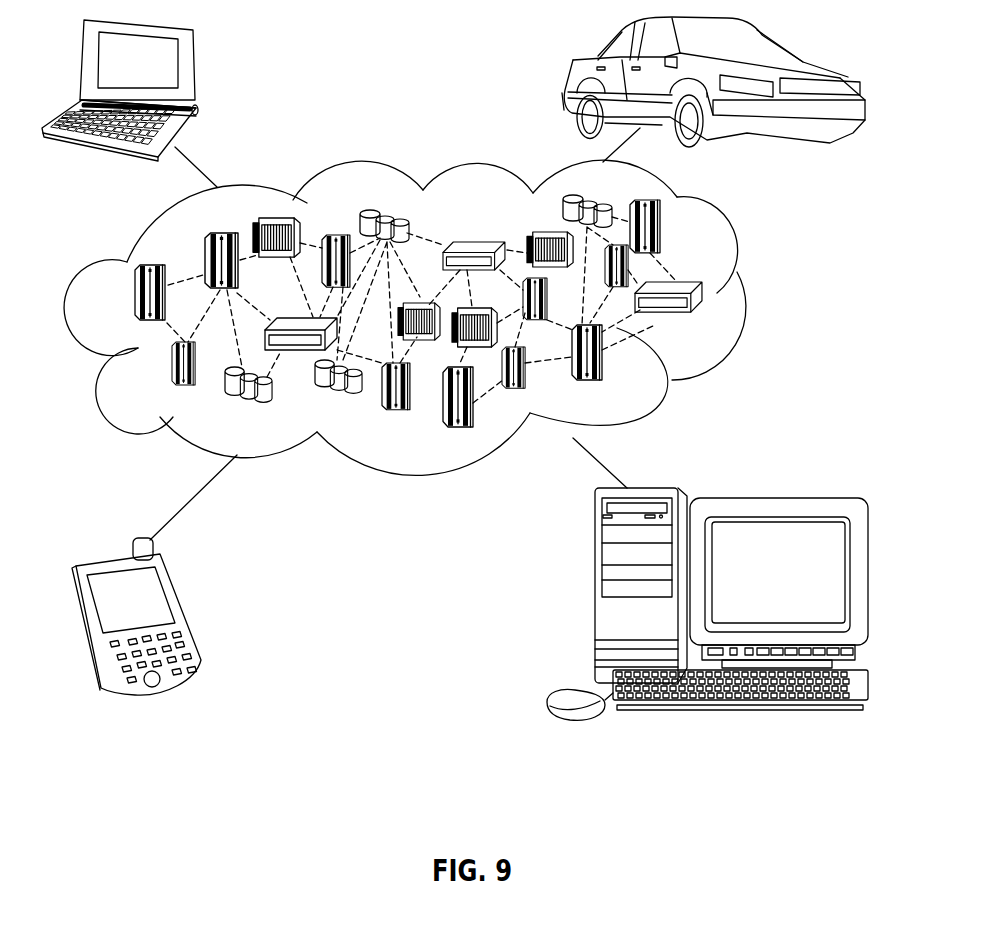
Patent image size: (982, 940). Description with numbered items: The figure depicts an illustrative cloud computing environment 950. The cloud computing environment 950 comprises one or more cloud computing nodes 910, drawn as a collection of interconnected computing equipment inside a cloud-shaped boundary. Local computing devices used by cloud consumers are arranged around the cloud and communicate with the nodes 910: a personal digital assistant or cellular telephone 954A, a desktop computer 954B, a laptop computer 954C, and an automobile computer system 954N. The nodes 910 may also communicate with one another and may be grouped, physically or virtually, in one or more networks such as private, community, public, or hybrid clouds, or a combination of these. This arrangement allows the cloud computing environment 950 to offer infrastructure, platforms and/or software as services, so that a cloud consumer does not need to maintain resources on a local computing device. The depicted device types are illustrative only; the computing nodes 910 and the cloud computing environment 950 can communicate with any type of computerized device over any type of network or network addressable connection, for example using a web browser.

The cloud computing environment 950 is at (745, 260).
The cloud computing nodes 910 is at (722, 318).
The personal digital assistant (PDA) or cellular telephone 954A is at (183, 613).
The desktop computer 954B is at (597, 592).
The laptop computer 954C is at (193, 63).
The automobile computer system 954N is at (571, 72).